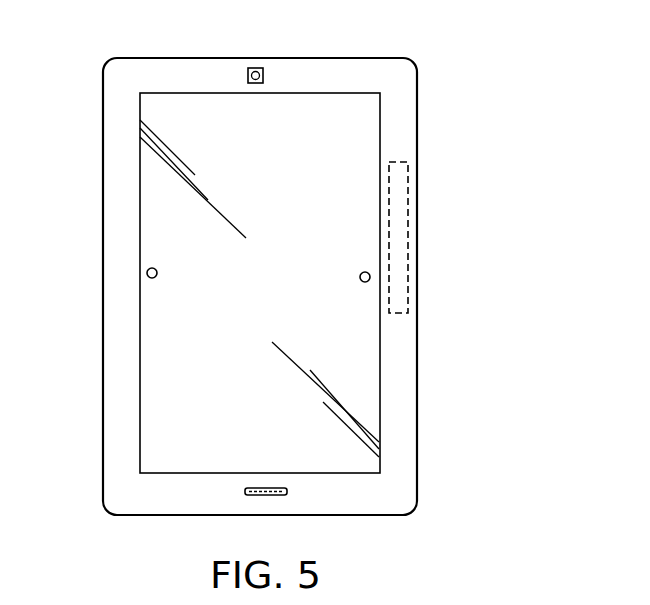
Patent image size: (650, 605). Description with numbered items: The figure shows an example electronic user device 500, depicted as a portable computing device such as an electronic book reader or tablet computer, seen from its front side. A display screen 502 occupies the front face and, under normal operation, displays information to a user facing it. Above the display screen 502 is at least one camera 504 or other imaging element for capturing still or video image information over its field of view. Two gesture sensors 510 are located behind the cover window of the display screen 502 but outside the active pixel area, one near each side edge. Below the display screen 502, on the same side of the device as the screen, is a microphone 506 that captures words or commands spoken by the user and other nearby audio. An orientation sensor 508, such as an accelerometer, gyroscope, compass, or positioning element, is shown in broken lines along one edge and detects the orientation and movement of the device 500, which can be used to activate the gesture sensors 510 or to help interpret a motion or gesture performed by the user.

The electronic user device 500 is at (551, 106).
The display screen 502 is at (140, 103).
The camera 504 is at (255, 69).
The microphone 506 is at (273, 497).
The orientation sensor 508 is at (408, 267).
The gesture sensors 510 is at (147, 273).